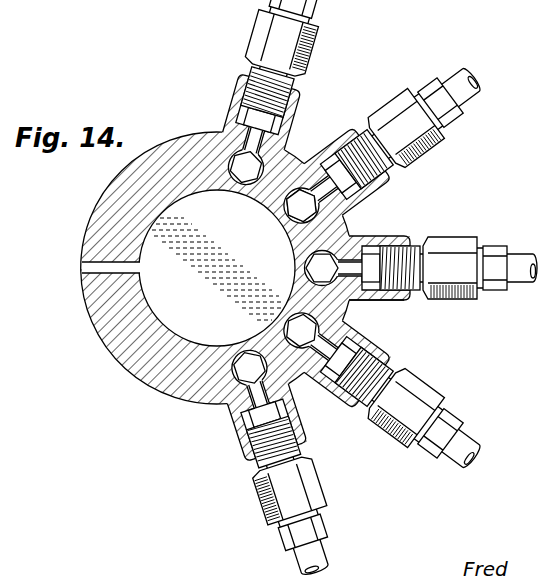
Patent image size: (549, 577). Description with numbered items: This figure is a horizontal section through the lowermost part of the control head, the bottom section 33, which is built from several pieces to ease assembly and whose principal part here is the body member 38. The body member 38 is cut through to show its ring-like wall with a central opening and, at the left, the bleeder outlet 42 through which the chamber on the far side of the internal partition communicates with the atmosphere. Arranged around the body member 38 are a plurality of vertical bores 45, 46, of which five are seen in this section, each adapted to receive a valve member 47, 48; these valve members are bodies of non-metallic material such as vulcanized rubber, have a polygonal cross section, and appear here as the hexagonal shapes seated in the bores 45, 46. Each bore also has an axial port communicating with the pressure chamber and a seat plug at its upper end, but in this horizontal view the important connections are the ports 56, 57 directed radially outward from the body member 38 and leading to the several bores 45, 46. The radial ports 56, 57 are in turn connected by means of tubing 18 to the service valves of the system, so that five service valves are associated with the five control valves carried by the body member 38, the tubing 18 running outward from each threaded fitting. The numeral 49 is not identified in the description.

The tubing 18 is at (478, 92).
The bottom section 33 is at (84, 208).
The body member 38 is at (107, 354).
The bleeder outlet 42 is at (88, 270).
The vertical bore 45 is at (320, 265).
The vertical bore 46 is at (305, 331).
The valve member 47 is at (345, 236).
The valve member 48 is at (344, 304).
The hexagonal plug 49 is at (243, 362).
The radial port 56 is at (370, 262).
The radial port 57 is at (358, 334).